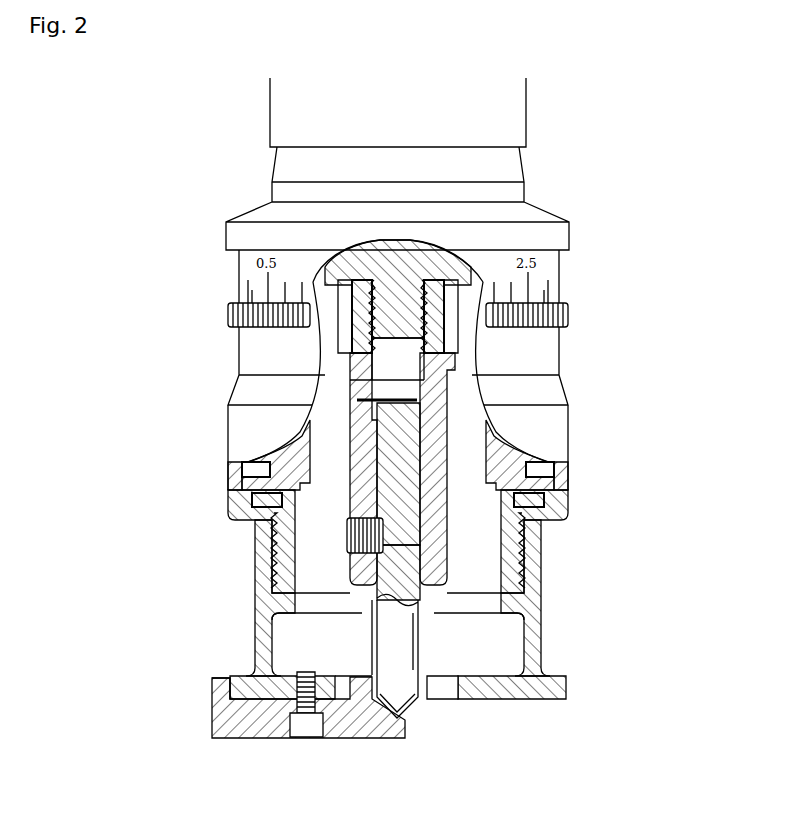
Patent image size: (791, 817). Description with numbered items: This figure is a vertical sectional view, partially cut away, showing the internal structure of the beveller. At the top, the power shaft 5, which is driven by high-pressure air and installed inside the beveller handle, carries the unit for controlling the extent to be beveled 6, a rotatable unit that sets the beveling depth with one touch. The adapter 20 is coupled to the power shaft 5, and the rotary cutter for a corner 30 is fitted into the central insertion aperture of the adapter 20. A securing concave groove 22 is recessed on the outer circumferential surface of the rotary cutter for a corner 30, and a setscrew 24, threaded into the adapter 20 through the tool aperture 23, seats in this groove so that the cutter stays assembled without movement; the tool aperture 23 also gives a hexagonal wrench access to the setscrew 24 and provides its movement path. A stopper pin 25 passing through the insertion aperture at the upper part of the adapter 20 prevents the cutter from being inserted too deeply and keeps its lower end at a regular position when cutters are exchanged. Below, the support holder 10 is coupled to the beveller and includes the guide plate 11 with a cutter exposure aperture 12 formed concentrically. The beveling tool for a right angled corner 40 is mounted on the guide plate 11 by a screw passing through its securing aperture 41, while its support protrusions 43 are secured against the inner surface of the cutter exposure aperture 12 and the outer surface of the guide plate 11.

The power shaft 5 is at (405, 265).
The unit for controlling the extent to be beveled 6 is at (555, 318).
The support holder 10 is at (530, 637).
The guide plate 11 is at (555, 690).
The cutter exposure aperture 12 is at (440, 688).
The adapter 20 is at (355, 475).
The securing concave groove 22 is at (385, 525).
The tool aperture 23 is at (277, 568).
The setscrew 24 is at (345, 536).
The stopper pin 25 is at (382, 397).
The rotary cutter for a corner 30 is at (400, 553).
The beveling tool for a right angled corner 40 is at (240, 720).
The securing aperture 41 is at (305, 725).
The support protrusion 43 is at (215, 690).